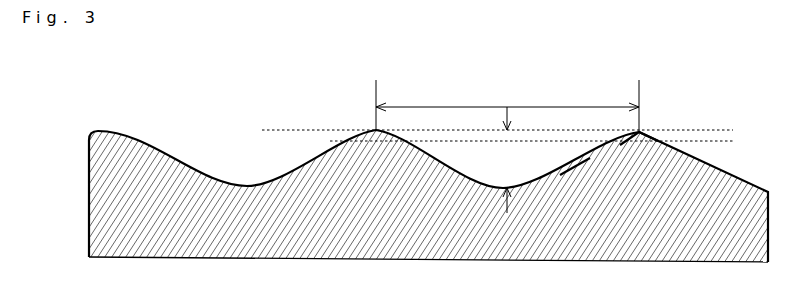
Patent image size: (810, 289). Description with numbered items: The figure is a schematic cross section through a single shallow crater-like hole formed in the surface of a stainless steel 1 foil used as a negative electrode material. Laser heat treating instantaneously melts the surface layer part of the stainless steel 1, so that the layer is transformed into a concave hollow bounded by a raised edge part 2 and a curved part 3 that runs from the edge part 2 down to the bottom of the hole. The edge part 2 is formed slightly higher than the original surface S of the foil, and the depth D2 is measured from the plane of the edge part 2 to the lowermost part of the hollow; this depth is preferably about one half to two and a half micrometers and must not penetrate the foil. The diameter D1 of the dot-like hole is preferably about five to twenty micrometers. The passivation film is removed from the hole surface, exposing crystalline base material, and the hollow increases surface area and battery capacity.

The stainless steel 1 is at (360, 167).
The edge part 2 is at (653, 126).
The curved part 3 is at (586, 154).
The surface of the stainless steel foil S is at (317, 146).
The diameter of dots D1 is at (507, 106).
The depth D2 is at (519, 160).